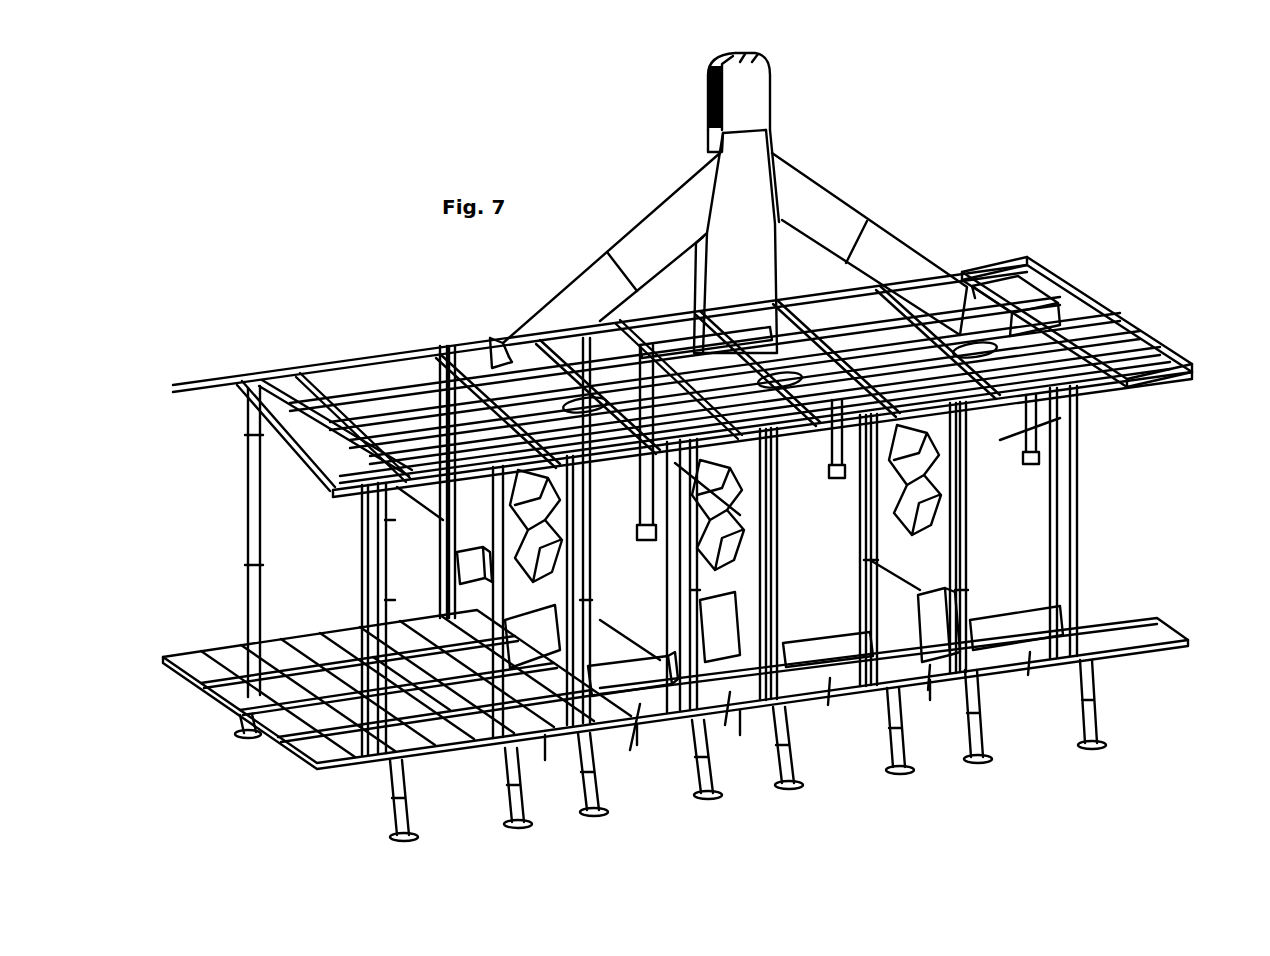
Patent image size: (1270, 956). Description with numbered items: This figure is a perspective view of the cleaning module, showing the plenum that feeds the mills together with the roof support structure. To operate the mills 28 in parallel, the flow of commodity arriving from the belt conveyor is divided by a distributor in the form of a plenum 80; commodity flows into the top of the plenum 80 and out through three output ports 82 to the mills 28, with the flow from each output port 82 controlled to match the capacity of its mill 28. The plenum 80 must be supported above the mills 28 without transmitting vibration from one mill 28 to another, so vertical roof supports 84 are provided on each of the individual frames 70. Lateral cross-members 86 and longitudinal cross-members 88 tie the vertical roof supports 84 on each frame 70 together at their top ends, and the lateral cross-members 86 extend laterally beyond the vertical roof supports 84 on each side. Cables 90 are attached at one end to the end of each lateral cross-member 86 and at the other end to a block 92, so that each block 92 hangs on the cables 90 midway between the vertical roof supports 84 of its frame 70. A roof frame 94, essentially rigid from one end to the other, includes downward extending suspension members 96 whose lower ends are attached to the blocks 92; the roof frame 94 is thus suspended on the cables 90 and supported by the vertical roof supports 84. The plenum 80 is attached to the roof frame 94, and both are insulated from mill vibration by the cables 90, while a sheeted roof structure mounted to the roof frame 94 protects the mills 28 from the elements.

The mill 28 is at (1025, 122).
The frame 70 is at (637, 730).
The plenum 80 is at (770, 80).
The output port 82 is at (826, 193).
The vertical roof support 84 is at (250, 482).
The lateral cross-member 86 is at (1023, 330).
The longitudinal cross-member 88 is at (330, 368).
The cable 90 is at (1023, 437).
The block 92 is at (828, 485).
The roof frame 94 is at (1178, 356).
The suspension member 96 is at (1057, 428).